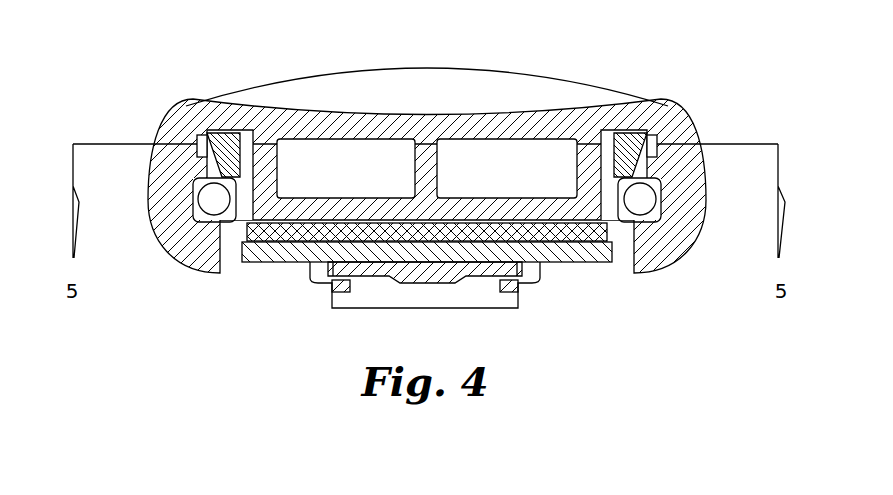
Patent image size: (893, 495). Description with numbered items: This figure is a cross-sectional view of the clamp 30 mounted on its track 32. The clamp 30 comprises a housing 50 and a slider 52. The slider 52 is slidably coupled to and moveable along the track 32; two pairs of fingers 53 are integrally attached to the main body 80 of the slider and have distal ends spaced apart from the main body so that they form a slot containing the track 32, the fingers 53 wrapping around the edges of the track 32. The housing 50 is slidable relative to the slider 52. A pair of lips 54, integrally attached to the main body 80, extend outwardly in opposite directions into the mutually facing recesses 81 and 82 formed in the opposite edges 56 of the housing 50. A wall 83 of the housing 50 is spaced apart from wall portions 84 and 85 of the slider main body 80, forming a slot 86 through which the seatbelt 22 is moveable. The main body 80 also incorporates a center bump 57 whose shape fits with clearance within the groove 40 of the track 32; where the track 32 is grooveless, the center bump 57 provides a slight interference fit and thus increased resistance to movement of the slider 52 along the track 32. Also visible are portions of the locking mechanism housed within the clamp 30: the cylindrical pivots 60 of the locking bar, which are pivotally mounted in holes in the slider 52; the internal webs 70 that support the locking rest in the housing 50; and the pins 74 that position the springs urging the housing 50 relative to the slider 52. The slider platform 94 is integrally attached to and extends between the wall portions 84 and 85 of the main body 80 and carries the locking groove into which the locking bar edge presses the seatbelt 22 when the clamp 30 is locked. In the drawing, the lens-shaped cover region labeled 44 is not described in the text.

The seatbelt 22 is at (294, 246).
The clamp 30 is at (190, 104).
The track 32 is at (351, 270).
The groove 40 is at (438, 290).
The lens dome 44 is at (454, 93).
The housing 50 is at (228, 100).
The slider 52 is at (415, 250).
The fingers 53 is at (338, 291).
The lips 54 is at (198, 125).
The edges 56 is at (207, 172).
The center bump 57 is at (466, 280).
The cylindrical pivots 60 is at (602, 150).
The internal webs 70 is at (425, 176).
The pins 74 is at (212, 205).
The main body 80 is at (362, 236).
The recess 81 is at (190, 142).
The recess 82 is at (652, 140).
The wall 83 is at (333, 211).
The wall portion 84 is at (246, 257).
The wall portion 85 is at (620, 262).
The slot 86 is at (300, 265).
The slider platform 94 is at (450, 257).